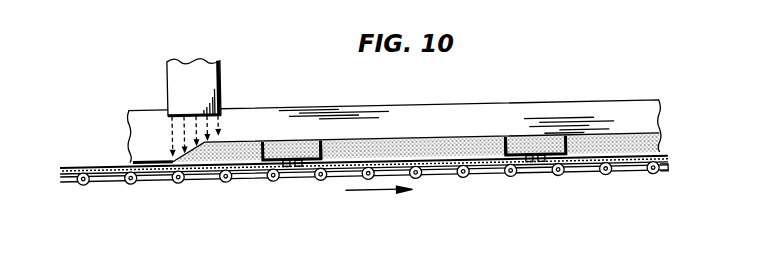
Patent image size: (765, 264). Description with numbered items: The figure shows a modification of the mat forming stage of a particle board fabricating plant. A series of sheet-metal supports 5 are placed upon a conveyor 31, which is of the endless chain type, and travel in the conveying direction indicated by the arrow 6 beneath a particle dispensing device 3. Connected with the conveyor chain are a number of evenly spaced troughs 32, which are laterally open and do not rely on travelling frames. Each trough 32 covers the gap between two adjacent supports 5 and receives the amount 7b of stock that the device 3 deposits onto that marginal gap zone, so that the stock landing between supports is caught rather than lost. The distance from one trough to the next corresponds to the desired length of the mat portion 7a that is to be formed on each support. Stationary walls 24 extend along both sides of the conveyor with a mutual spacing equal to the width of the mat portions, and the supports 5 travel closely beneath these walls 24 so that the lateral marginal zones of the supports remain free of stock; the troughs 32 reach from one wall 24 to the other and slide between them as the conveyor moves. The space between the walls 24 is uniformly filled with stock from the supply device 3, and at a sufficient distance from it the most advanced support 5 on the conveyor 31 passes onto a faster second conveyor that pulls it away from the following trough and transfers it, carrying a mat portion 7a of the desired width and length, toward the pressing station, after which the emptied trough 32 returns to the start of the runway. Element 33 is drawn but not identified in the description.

The particle dispensing device 3 is at (169, 86).
The stationary walls 24 is at (237, 121).
The sheet-metal supports 5 is at (100, 168).
The conveyor 31 is at (153, 184).
The support 33 is at (292, 176).
The amount of stock 7b is at (277, 154).
The troughs 32 is at (321, 151).
The mat portion 7a is at (408, 156).
The conveying direction 6 is at (372, 200).